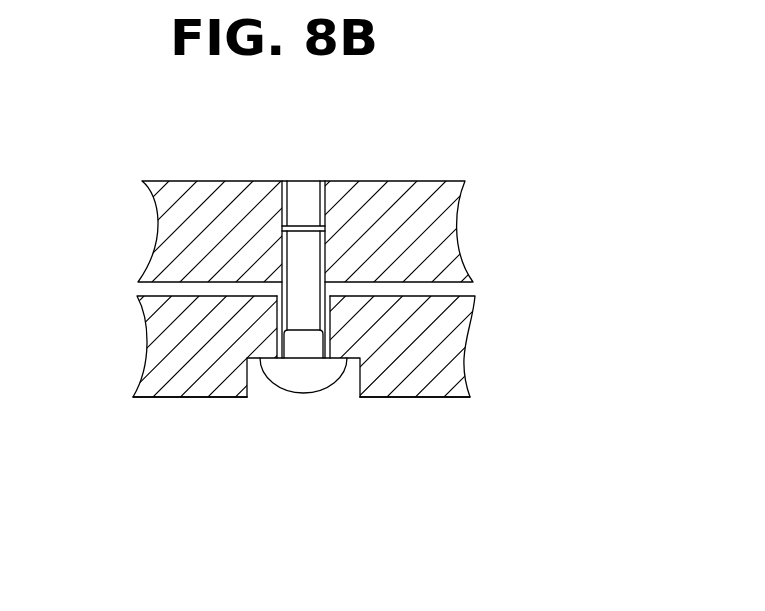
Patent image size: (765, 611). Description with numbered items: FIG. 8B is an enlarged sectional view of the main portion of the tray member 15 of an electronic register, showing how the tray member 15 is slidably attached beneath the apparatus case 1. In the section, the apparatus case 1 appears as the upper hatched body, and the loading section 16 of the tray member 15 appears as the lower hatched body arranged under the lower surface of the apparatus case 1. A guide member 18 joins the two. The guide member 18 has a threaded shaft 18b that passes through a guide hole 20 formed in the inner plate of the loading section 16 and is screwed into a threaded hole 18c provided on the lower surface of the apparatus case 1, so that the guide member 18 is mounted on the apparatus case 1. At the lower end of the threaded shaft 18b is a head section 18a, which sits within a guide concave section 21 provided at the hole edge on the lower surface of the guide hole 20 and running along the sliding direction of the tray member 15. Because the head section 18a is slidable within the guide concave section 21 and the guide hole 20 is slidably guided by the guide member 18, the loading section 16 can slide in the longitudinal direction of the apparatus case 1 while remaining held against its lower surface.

The apparatus case 1 is at (462, 228).
The tray member 15 is at (435, 397).
The loading section 16 is at (187, 383).
The guide member 18 is at (271, 395).
The head section 18a is at (306, 376).
The threaded shaft 18b is at (300, 260).
The threaded hole 18c is at (304, 190).
The guide hole 20 is at (282, 327).
The guide concave section 21 is at (348, 380).